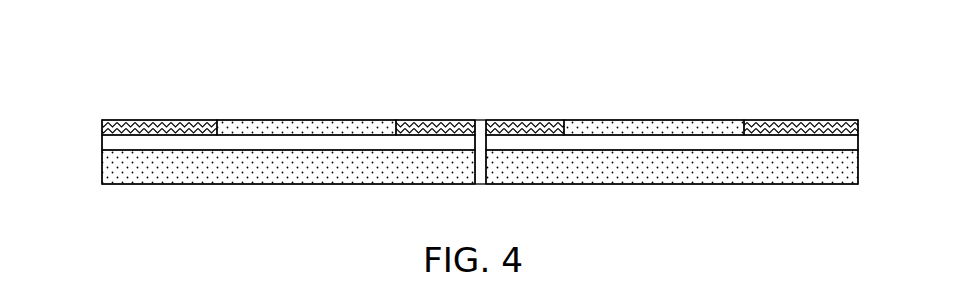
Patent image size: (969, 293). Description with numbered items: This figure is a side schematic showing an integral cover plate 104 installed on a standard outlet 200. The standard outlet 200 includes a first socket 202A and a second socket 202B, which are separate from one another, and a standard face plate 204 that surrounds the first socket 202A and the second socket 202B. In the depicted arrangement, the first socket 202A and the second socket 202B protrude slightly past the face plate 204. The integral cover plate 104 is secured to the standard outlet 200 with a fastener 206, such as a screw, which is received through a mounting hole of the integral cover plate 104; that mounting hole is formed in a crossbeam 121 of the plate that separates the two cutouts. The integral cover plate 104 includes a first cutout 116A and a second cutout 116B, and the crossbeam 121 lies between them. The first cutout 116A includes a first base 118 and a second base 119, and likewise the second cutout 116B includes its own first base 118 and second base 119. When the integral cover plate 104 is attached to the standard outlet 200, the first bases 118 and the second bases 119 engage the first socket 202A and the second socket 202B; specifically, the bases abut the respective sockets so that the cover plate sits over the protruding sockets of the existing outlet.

The integral cover plate 104 is at (834, 118).
The first cutout 116A is at (350, 93).
The second cutout 116B is at (622, 88).
The first base 118 is at (215, 108).
The second base 119 is at (398, 108).
The crossbeam 121 is at (533, 133).
The standard outlet 200 is at (201, 176).
The first socket 202A is at (268, 119).
The second socket 202B is at (696, 119).
The standard face plate 204 is at (116, 145).
The fastener 206 is at (482, 119).